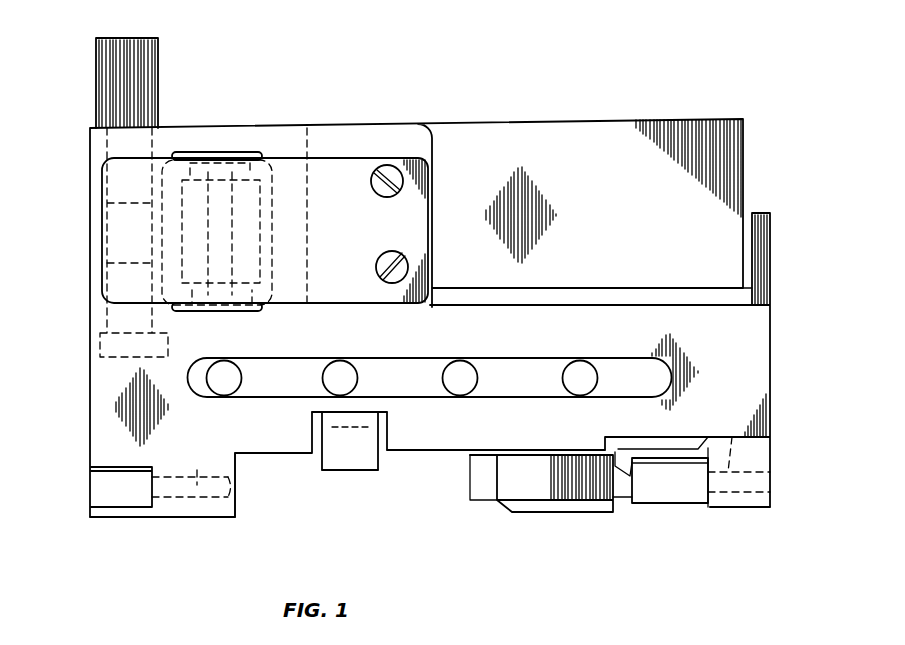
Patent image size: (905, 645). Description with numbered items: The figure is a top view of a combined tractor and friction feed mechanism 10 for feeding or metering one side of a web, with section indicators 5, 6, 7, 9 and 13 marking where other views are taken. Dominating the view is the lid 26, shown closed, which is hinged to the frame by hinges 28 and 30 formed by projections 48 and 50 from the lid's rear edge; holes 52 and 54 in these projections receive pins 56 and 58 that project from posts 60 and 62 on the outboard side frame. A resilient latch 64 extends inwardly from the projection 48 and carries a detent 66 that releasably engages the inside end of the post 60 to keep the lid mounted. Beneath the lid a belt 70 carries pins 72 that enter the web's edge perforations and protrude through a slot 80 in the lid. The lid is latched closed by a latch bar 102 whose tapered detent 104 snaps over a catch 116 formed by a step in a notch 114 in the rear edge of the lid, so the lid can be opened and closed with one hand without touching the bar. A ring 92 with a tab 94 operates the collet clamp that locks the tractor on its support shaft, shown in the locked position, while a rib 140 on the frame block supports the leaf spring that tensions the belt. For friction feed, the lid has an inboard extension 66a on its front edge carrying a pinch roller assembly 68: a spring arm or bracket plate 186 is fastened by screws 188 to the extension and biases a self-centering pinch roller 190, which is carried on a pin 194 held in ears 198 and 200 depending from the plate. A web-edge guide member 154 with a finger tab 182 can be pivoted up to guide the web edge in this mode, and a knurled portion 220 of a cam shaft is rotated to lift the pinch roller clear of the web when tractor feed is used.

The combined tractor and friction feed mechanism 10 is at (512, 62).
The lid 26 is at (90, 310).
The hinge 28 is at (746, 524).
The hinge 30 is at (101, 529).
The projection 48 is at (770, 445).
The projection 50 is at (237, 508).
The hole 52 is at (770, 495).
The hole 54 is at (225, 476).
The pin 56 is at (730, 438).
The pin 58 is at (200, 472).
The post 60 is at (680, 497).
The post 62 is at (98, 492).
The resilient latch 64 is at (655, 455).
The detent 66 is at (625, 450).
The inboard extension 66a is at (408, 130).
The pinch roller assembly 68 is at (290, 169).
The belt 70 is at (290, 390).
The pins 72 is at (224, 376).
The slot 80 is at (530, 365).
The ring 92 is at (492, 515).
The tab 94 is at (573, 500).
The latch bar 102 is at (350, 471).
The detent 104 is at (366, 418).
The notch 114 is at (384, 444).
The catch 116 is at (361, 425).
The rib 140 is at (688, 120).
The web-edge guide member 154 is at (703, 292).
The tab 182 is at (760, 213).
The spring arm or bracket plate 186 is at (432, 168).
The screws 188 is at (381, 252).
The pinch roller 190 is at (180, 259).
The pin 194 is at (178, 232).
The ear 198 is at (168, 159).
The ear 200 is at (255, 306).
The knurled portion 220 is at (159, 52).
The section line 5 is at (78, 385).
The section line 6 is at (320, 86).
The section line 7 is at (639, 77).
The section line 9 is at (194, 86).
The section line 13 is at (363, 287).